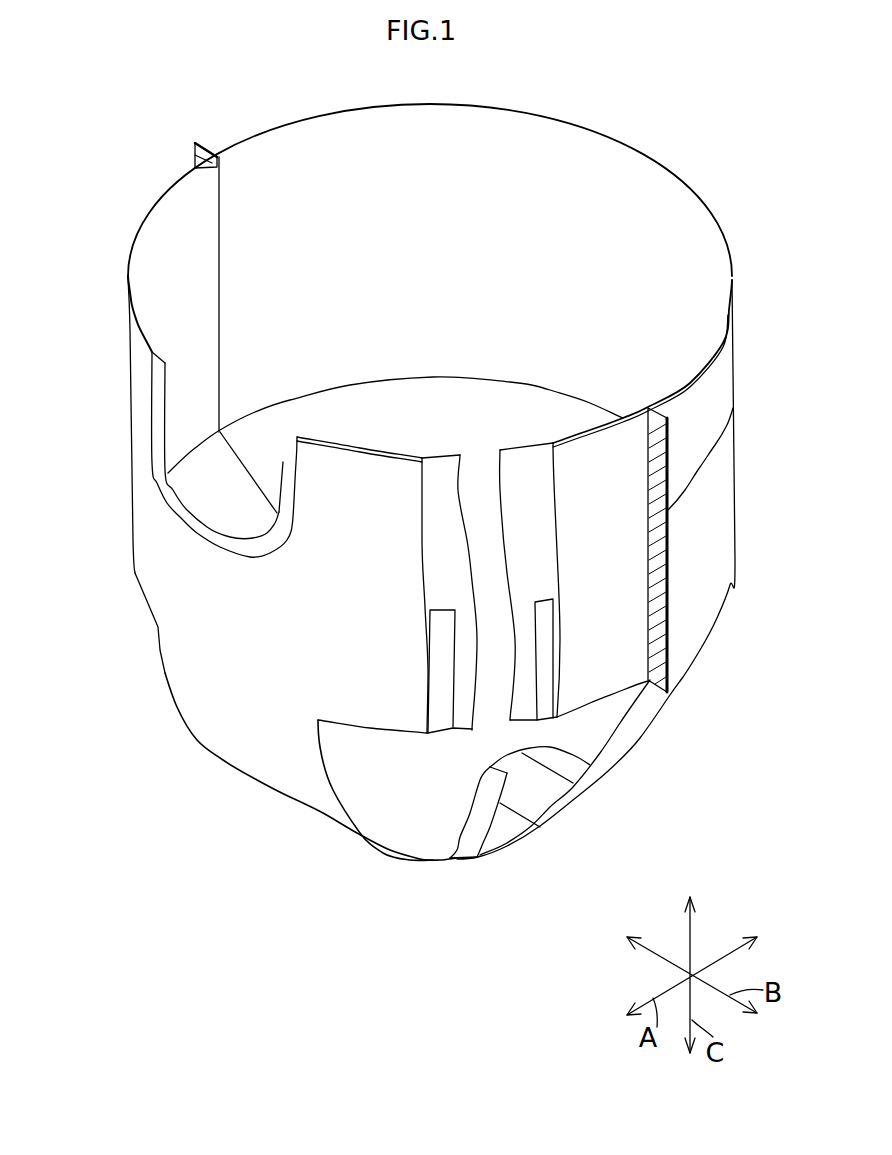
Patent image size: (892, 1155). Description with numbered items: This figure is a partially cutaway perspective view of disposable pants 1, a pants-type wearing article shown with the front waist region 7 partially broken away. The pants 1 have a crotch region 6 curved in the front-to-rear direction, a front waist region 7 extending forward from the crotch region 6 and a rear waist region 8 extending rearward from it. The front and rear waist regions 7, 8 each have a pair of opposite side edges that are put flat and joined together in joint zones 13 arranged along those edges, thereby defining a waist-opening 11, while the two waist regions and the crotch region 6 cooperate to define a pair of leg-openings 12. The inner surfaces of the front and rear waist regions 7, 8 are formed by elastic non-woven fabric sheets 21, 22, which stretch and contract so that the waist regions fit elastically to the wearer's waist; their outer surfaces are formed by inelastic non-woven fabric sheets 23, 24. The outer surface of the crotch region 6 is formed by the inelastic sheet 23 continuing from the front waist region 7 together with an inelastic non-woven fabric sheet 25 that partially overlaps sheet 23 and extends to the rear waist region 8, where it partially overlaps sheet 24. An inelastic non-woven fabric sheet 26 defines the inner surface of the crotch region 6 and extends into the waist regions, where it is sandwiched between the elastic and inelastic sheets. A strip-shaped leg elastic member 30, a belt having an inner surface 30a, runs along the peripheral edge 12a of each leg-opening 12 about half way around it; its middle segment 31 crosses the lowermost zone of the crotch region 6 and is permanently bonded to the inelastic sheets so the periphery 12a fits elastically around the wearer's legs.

The pants 1 is at (665, 112).
The crotch region 6 is at (260, 757).
The front waist region 7 is at (160, 562).
The rear waist region 8 is at (723, 355).
The waist-opening 11 is at (317, 140).
The leg-opening 12 is at (209, 487).
The peripheral edge of the leg-opening 12a is at (313, 773).
The joint zone 13 is at (658, 550).
The elastic non-woven fabric sheet 21 is at (442, 472).
The elastic non-woven fabric sheet 22 is at (542, 137).
The inelastic non-woven fabric sheet 23 is at (402, 472).
The inelastic non-woven fabric sheet 24 is at (722, 393).
The inelastic non-woven fabric sheet 25 is at (727, 462).
The inelastic non-woven fabric sheet 26 is at (433, 390).
The leg elastic member 30 is at (563, 773).
The inner surface of the leg elastic member 30a is at (550, 790).
The middle segment 31 is at (523, 805).